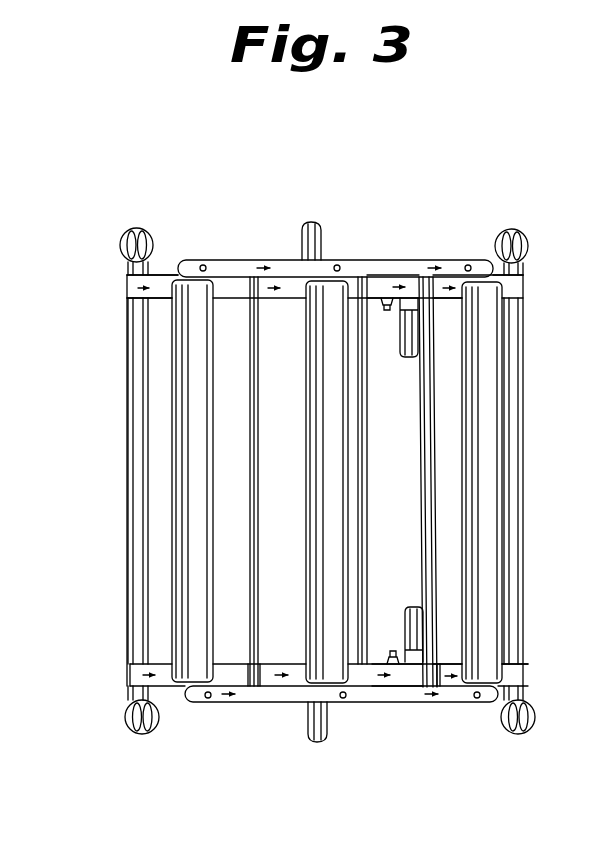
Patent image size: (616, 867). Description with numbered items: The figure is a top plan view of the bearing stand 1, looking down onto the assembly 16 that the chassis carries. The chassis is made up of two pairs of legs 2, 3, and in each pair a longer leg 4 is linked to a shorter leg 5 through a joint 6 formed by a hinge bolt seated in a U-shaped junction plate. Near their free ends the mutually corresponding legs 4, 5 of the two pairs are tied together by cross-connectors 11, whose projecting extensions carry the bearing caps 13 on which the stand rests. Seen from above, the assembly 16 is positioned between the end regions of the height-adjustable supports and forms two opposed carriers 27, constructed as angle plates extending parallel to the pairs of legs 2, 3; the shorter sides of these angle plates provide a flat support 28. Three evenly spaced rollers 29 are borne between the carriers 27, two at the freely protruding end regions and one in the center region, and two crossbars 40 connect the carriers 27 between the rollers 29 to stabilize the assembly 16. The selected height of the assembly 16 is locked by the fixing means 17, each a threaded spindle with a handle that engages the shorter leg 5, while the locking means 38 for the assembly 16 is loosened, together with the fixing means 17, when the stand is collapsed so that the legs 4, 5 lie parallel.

The bearing stand 1 is at (478, 207).
The pair of legs 2 is at (325, 773).
The pair of legs 3 is at (235, 222).
The leg 4 is at (152, 285).
The leg 5 is at (512, 283).
The joint 6 is at (382, 290).
The cross-connectors 11 is at (147, 557).
The bearing caps 13 is at (133, 228).
The assembly 16 is at (441, 250).
The fixing means 17 is at (400, 362).
The carriers 27 is at (252, 262).
The flat support 28 is at (420, 265).
The rollers 29 is at (323, 345).
The locking means 38 is at (313, 205).
The crossbars 40 is at (255, 684).